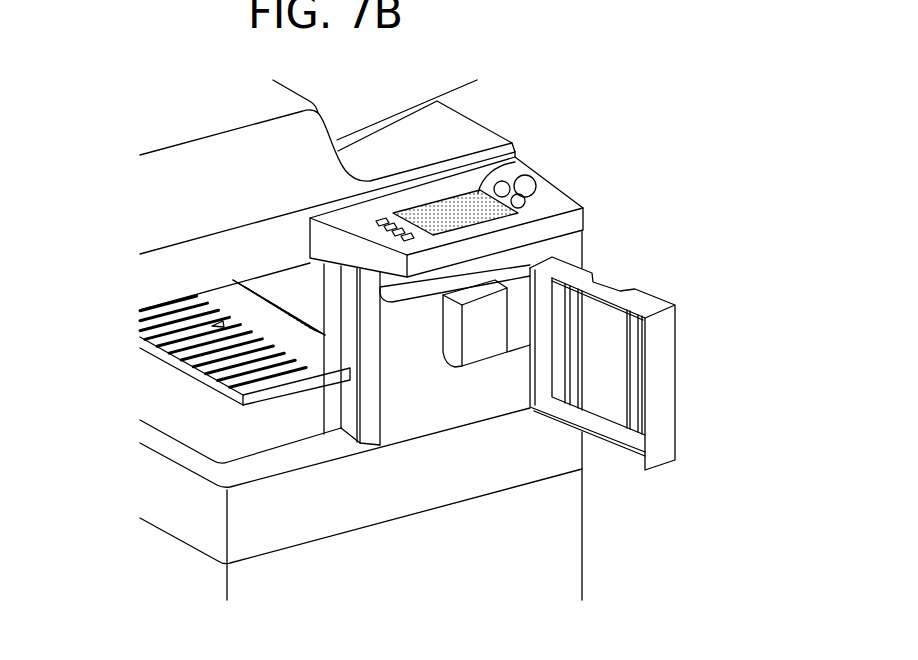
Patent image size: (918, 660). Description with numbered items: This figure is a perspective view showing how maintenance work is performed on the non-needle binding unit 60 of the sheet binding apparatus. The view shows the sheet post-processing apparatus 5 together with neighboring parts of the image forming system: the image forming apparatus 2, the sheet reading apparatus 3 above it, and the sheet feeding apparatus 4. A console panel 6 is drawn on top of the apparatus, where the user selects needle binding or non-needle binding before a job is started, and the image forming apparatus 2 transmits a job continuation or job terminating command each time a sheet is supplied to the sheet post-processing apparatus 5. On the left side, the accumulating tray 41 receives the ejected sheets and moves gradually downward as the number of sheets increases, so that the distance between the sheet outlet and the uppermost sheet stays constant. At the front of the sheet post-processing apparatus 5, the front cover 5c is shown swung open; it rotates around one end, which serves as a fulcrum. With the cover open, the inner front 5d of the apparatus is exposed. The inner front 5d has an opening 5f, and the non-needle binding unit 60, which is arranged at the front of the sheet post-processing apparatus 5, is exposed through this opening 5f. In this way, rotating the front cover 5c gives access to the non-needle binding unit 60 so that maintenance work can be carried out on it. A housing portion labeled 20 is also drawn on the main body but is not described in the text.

The image forming apparatus 2 is at (552, 548).
The sheet reading apparatus 3 is at (170, 273).
The sheet feeding apparatus 4 is at (255, 152).
The sheet post-processing apparatus 5 is at (423, 420).
The front cover 5c is at (653, 300).
The inner front 5d is at (447, 407).
The opening 5f is at (517, 347).
The console panel 6 is at (481, 191).
The housing 20 is at (573, 253).
The accumulating tray 41 is at (227, 395).
The non-needle binding unit 60 is at (487, 354).